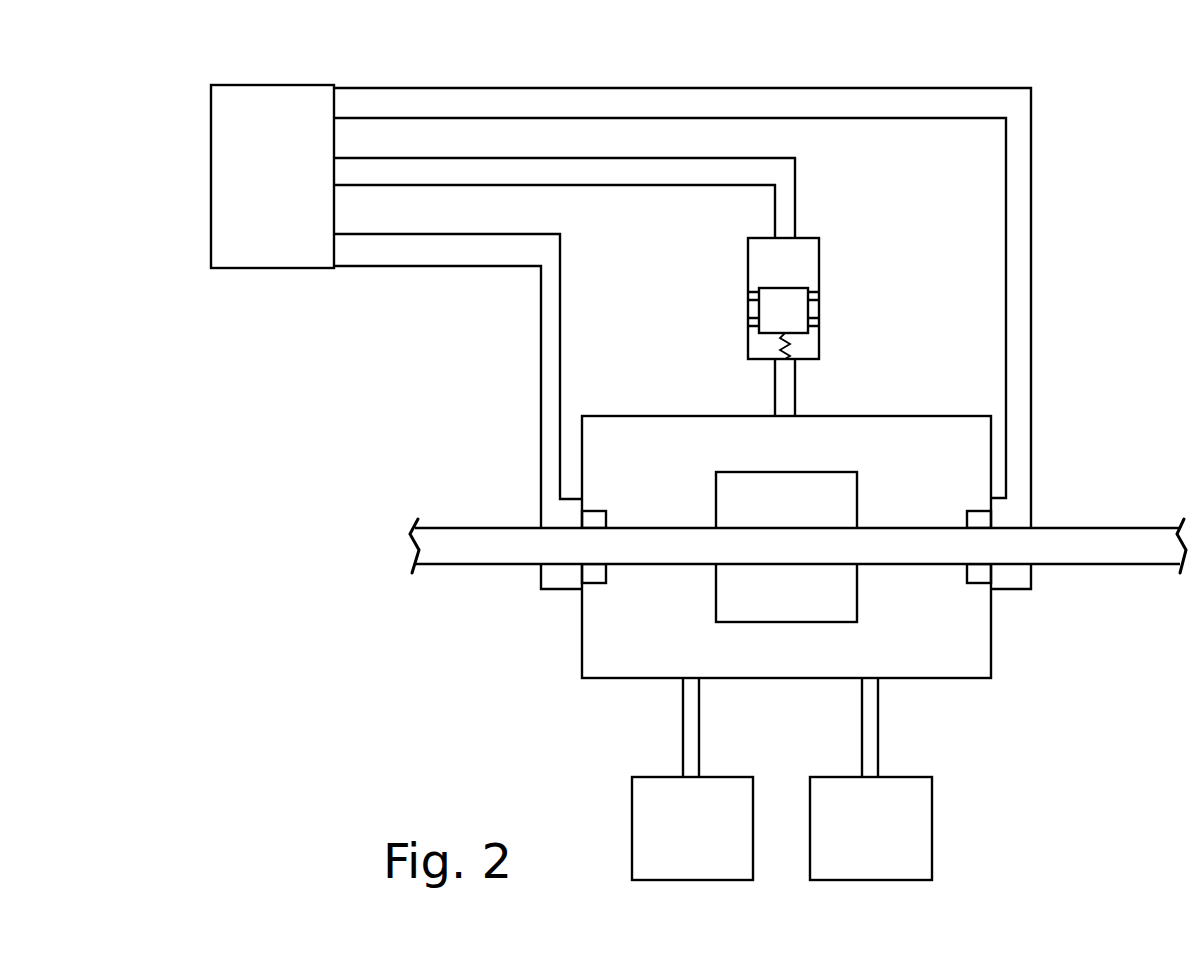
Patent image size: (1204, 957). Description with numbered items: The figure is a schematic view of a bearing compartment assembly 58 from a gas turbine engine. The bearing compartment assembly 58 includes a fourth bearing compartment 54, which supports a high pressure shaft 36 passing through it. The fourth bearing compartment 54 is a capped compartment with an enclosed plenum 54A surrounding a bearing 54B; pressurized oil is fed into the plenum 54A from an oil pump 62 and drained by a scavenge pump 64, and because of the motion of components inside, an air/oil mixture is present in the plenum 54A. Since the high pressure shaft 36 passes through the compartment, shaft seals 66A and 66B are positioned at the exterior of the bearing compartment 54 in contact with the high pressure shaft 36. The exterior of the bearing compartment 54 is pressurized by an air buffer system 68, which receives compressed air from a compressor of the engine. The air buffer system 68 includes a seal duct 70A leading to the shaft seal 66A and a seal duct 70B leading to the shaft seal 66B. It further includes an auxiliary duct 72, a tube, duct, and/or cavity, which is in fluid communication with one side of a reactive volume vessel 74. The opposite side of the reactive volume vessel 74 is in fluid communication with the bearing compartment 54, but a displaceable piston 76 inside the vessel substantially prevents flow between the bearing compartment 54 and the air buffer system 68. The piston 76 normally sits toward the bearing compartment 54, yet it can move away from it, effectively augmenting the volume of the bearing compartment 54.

The high pressure shaft 36 is at (1117, 528).
The fourth bearing compartment 54 is at (772, 551).
The plenum 54A is at (647, 649).
The bearing 54B is at (818, 498).
The bearing compartment assembly 58 is at (1108, 149).
The oil pump 62 is at (692, 880).
The scavenge pump 64 is at (883, 880).
The shaft seal 66A is at (580, 573).
The shaft seal 66B is at (992, 572).
The air buffer system 68 is at (295, 76).
The seal duct 70A is at (492, 267).
The seal duct 70B is at (678, 88).
The auxiliary duct 72 is at (671, 187).
The reactive volume vessel 74 is at (830, 290).
The piston 76 is at (819, 307).